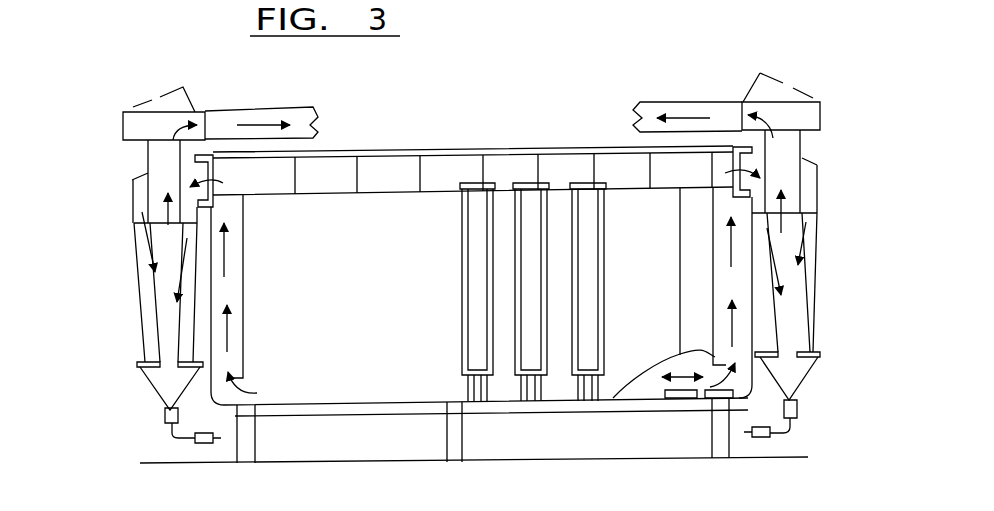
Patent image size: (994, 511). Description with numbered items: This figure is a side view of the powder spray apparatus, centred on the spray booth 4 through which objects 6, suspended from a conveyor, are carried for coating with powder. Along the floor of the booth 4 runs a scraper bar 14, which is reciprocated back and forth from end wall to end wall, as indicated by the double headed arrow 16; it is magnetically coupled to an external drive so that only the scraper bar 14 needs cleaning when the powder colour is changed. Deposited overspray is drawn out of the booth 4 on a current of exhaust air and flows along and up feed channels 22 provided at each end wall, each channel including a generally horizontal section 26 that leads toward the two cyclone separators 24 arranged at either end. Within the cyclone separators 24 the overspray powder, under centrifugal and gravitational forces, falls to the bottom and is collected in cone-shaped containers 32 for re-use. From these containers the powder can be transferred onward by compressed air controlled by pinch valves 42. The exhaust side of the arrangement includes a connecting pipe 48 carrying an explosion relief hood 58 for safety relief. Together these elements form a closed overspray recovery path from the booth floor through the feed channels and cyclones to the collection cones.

The spray booth 4 is at (415, 149).
The objects 6 is at (480, 300).
The scraper bar 14 is at (647, 377).
The double headed arrow 16 is at (679, 353).
The feed channels 22 is at (213, 303).
The cyclone separators 24 is at (812, 278).
The generally horizontal section 26 is at (227, 393).
The cone-shaped containers 32 is at (790, 377).
The pinch valves 42 is at (170, 424).
The connecting pipe 48 is at (690, 102).
The explosion relief hood 58 is at (170, 96).